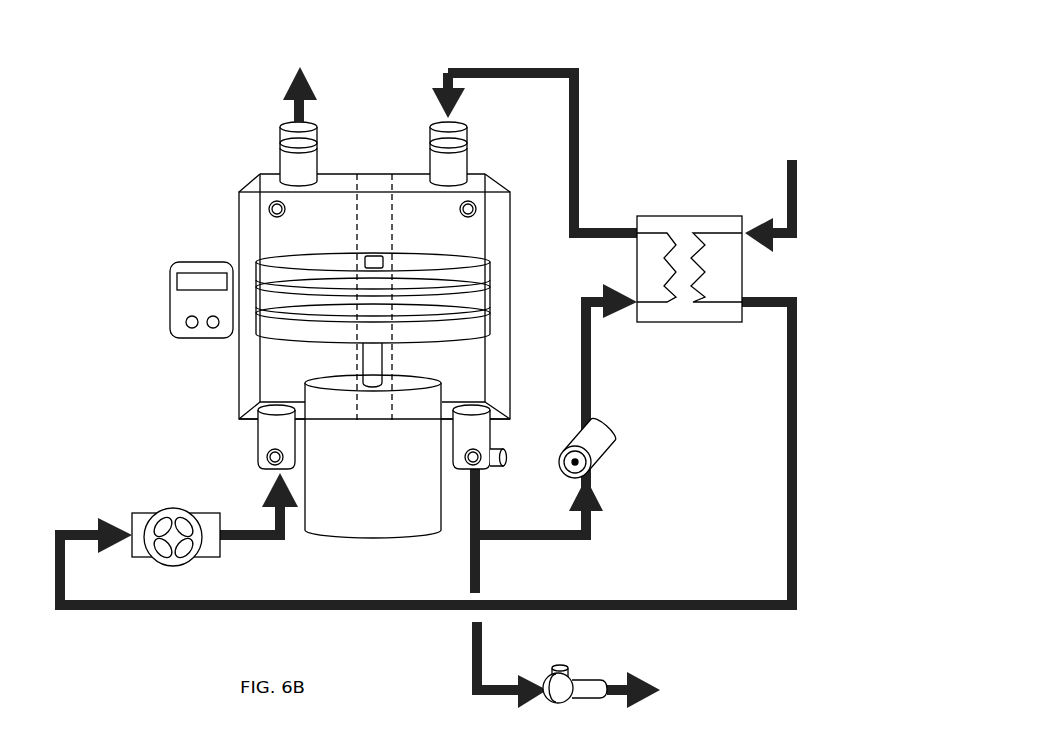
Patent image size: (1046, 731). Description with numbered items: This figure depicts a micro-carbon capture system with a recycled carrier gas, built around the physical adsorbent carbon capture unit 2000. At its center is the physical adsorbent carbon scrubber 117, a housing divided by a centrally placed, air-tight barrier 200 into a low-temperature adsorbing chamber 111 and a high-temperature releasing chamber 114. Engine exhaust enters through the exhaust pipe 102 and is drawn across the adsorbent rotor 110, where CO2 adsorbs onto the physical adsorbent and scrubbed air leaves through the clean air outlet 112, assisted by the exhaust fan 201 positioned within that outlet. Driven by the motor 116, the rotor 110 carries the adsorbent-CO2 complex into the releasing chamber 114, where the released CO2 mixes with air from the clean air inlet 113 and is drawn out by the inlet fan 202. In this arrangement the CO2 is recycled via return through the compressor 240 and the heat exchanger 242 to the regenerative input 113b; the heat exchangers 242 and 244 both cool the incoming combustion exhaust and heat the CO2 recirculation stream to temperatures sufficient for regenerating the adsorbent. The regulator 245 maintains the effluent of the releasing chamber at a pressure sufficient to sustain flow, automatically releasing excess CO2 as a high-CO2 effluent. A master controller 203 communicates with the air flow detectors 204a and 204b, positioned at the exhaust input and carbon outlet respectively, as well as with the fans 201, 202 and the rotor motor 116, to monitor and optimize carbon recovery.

The physical adsorbent carbon capture unit 2000 is at (731, 55).
The physical adsorbent carbon scrubber 117 is at (240, 232).
The low-temperature adsorbing chamber 111 is at (297, 221).
The high-temperature releasing chamber 114 is at (449, 221).
The motor 116 is at (373, 456).
The adsorbent rotor 110 is at (450, 333).
The barrier 200 is at (378, 177).
The exhaust fan 201 is at (280, 147).
The clean air outlet 112 is at (280, 127).
The inlet fan 202 is at (470, 145).
The regenerative input 113b is at (465, 127).
The exhaust pipe 102 is at (268, 435).
The air flow detector 204a is at (267, 457).
The clean air inlet 113 is at (490, 440).
The air flow detector 204b is at (482, 467).
The master controller 203 is at (180, 307).
The heat exchanger 244 is at (172, 508).
The heat exchanger 242 is at (671, 213).
The compressor 240 is at (617, 427).
The regulator 245 is at (583, 678).